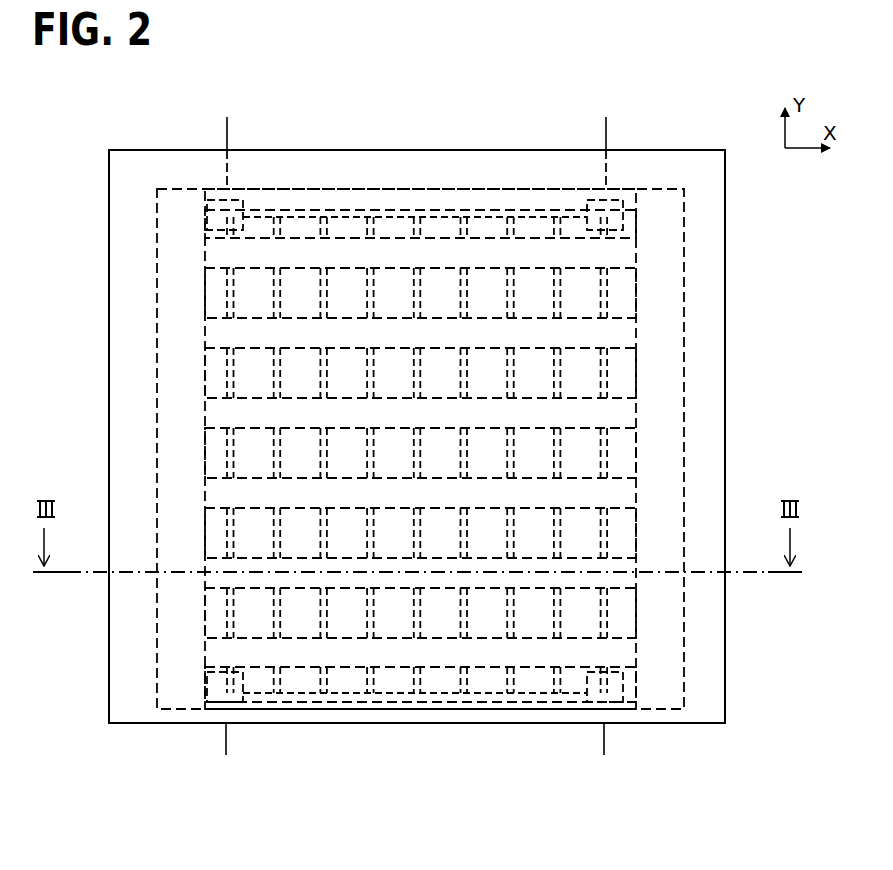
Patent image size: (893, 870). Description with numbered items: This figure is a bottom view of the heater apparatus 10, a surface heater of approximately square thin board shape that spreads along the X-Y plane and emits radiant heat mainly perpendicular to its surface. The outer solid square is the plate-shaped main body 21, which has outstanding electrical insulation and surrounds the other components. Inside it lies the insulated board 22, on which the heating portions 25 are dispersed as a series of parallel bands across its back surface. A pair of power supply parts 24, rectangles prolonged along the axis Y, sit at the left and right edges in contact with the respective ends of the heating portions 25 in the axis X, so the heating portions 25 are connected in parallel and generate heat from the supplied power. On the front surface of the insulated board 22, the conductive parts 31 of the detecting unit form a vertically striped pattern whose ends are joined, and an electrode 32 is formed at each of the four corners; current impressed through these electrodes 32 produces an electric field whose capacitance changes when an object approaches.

The heater apparatus 10 is at (452, 418).
The main body 21 is at (702, 688).
The insulated board 22 is at (500, 448).
The power supply part 24 is at (172, 690).
The heating portion 25 is at (627, 493).
The conductive part 31 is at (320, 699).
The electrode 32 is at (600, 207).